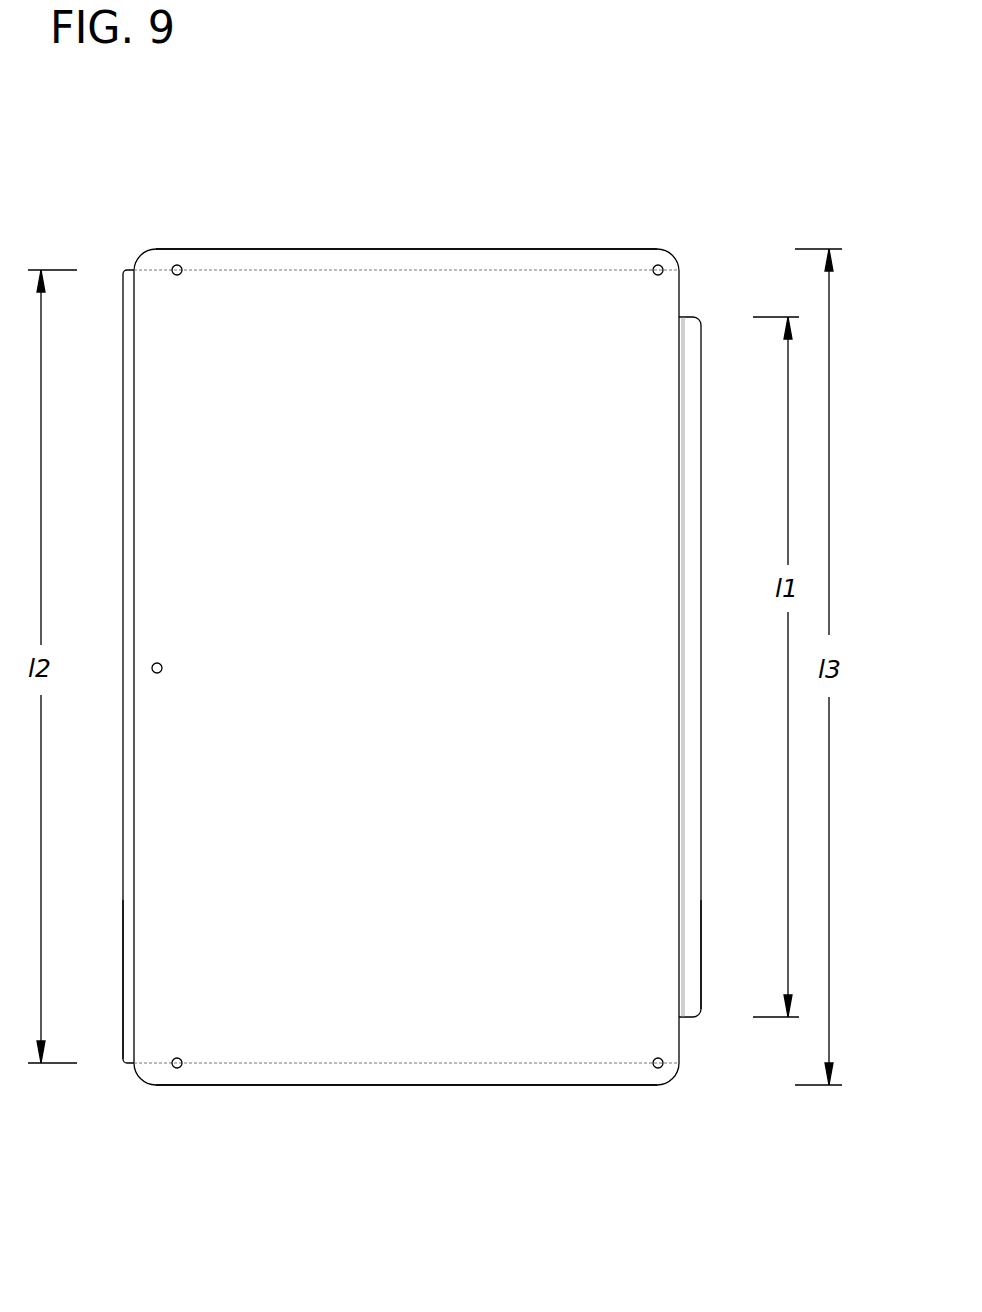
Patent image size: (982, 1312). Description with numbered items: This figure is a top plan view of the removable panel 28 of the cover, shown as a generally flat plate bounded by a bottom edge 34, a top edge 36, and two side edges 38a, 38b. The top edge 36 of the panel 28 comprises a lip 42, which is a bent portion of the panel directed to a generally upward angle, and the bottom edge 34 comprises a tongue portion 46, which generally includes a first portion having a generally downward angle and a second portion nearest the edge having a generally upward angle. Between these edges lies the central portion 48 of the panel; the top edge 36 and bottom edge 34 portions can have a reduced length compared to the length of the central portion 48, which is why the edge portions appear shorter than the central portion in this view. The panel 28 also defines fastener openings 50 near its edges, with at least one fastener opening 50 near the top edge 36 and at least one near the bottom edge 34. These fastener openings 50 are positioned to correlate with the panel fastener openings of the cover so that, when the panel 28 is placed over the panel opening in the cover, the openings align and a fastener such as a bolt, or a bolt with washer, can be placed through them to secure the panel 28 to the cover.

The panel 28 is at (411, 616).
The bottom edge 34 is at (693, 846).
The top edge 36 is at (123, 815).
The side edge 38a is at (301, 249).
The side edge 38b is at (340, 1085).
The lip 42 is at (123, 1002).
The tongue portion 46 is at (688, 985).
The central portion 48 is at (485, 325).
The fastener opening 50 is at (177, 265).